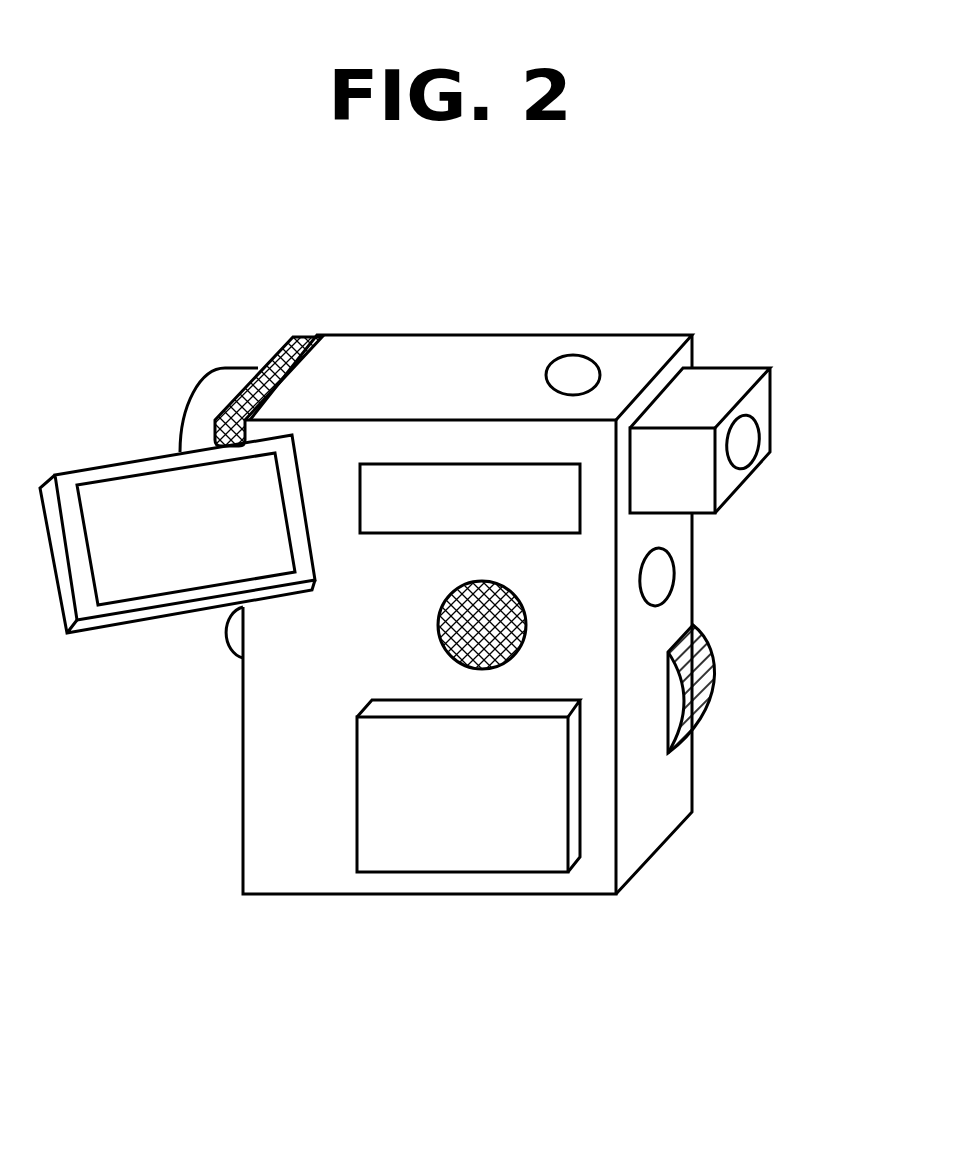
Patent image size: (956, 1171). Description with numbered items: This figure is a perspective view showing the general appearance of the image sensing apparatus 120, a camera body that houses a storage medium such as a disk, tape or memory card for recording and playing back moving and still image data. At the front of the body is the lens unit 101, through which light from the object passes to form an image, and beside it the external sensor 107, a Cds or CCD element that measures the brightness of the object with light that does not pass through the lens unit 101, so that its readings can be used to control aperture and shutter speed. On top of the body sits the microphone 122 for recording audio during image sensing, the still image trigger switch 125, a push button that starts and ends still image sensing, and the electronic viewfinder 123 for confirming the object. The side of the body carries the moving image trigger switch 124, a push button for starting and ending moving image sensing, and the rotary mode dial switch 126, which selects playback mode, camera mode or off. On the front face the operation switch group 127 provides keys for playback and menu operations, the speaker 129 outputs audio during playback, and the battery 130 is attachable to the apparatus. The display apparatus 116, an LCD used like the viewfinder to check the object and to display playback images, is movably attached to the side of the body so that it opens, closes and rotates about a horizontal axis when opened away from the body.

The lens unit 101 is at (233, 380).
The external sensor 107 is at (233, 642).
The display apparatus 116 is at (132, 485).
The image sensing apparatus 120 is at (685, 773).
The microphone 122 is at (298, 335).
The electronic viewfinder 123 is at (728, 377).
The moving image trigger switch 124 is at (667, 578).
The still image trigger switch 125 is at (578, 362).
The rotary mode dial switch 126 is at (718, 673).
The operation switch group 127 is at (402, 474).
The speaker 129 is at (478, 668).
The battery 130 is at (518, 855).